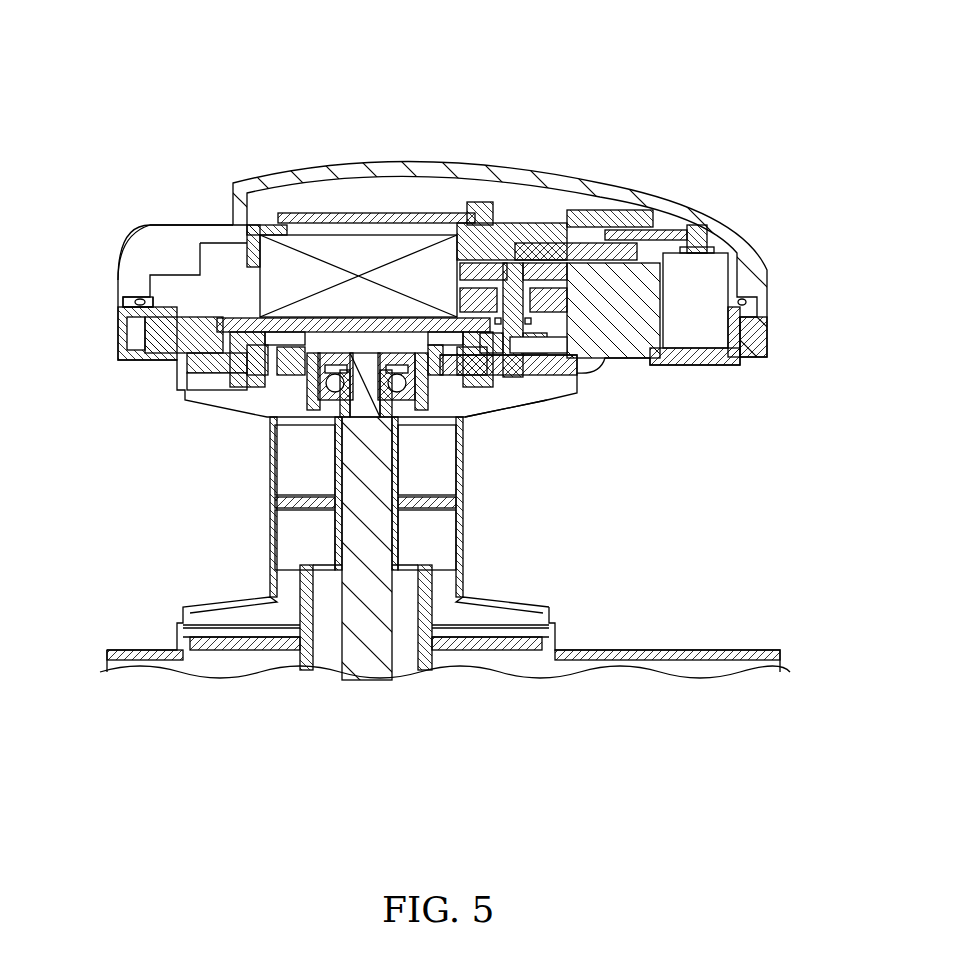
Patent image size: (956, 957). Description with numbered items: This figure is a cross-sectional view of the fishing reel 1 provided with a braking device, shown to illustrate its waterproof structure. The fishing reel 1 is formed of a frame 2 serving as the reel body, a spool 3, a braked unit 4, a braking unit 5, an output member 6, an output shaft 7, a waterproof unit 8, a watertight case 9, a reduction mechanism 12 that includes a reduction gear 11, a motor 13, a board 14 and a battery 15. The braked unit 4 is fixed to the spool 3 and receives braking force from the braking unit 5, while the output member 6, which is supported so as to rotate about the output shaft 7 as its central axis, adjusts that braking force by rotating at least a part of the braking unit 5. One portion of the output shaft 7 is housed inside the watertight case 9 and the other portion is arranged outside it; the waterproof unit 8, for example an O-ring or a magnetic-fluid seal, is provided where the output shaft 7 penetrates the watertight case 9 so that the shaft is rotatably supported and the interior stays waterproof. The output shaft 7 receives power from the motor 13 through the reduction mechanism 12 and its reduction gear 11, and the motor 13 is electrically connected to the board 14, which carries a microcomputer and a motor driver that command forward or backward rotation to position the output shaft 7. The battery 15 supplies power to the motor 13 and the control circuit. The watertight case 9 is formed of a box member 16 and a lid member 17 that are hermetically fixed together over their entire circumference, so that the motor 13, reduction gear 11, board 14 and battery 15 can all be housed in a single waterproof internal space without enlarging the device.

The fishing reel 1 is at (458, 42).
The frame 2 is at (607, 387).
The spool 3 is at (473, 597).
The braked unit 4 is at (467, 413).
The braking unit 5 is at (477, 393).
The output member 6 is at (507, 380).
The output shaft 7 is at (560, 370).
The waterproof unit 8 is at (517, 370).
The watertight case 9 is at (170, 162).
The reduction gear 11 is at (543, 250).
The reduction mechanism 12 is at (632, 108).
The motor 13 is at (700, 327).
The board 14 is at (367, 215).
The battery 15 is at (318, 248).
The box member 16 is at (127, 300).
The lid member 17 is at (177, 255).